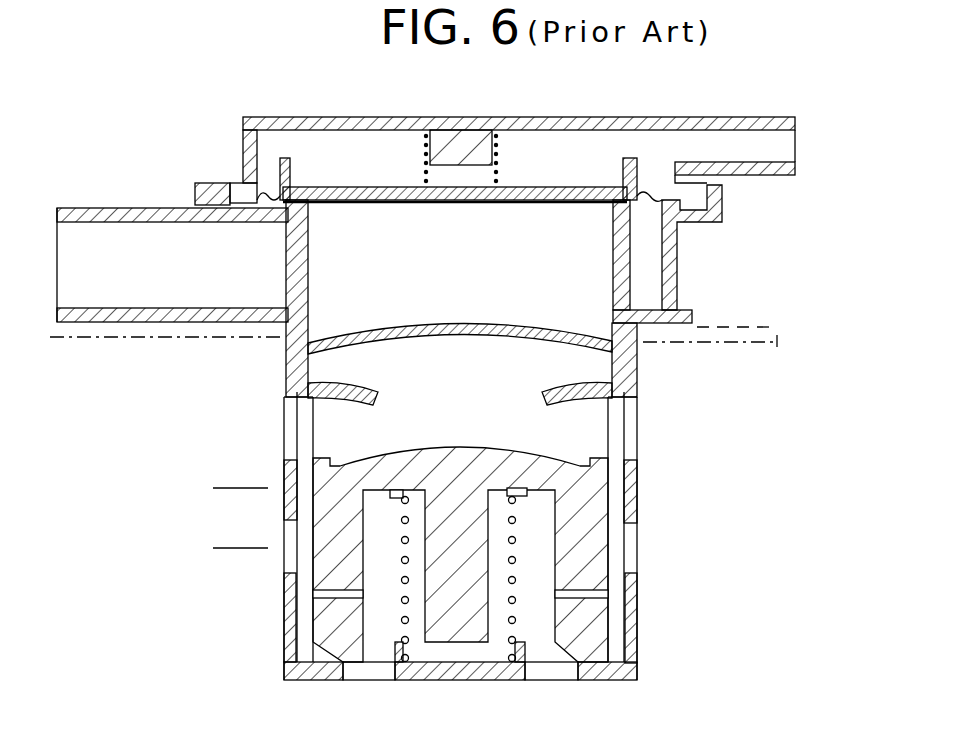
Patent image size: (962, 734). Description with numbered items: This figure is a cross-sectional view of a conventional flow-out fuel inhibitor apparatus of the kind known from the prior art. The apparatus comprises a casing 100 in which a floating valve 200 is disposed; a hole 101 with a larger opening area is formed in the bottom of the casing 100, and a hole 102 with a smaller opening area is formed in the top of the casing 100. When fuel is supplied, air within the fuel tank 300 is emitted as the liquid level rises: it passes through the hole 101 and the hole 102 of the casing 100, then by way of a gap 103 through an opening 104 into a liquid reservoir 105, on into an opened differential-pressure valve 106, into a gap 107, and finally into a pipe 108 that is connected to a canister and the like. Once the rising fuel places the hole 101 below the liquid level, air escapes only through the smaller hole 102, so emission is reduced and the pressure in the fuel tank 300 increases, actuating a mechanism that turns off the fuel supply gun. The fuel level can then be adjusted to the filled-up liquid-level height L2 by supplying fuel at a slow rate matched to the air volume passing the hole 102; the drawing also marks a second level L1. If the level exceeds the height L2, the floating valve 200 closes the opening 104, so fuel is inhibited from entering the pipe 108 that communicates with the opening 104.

The casing 100 is at (637, 375).
The hole with a larger opening area 101 is at (628, 562).
The hole with a smaller opening area 102 is at (628, 430).
The gap 103 is at (305, 580).
The opening 104 is at (378, 395).
The liquid reservoir 105 is at (500, 299).
The differential-pressure valve 106 is at (392, 204).
The gap 107 is at (648, 248).
The pipe 108 is at (123, 208).
The floating valve 200 is at (468, 460).
The fuel tank 300 is at (745, 327).
The length L1 is at (648, 548).
The filled-up liquid-level height L2 is at (645, 490).